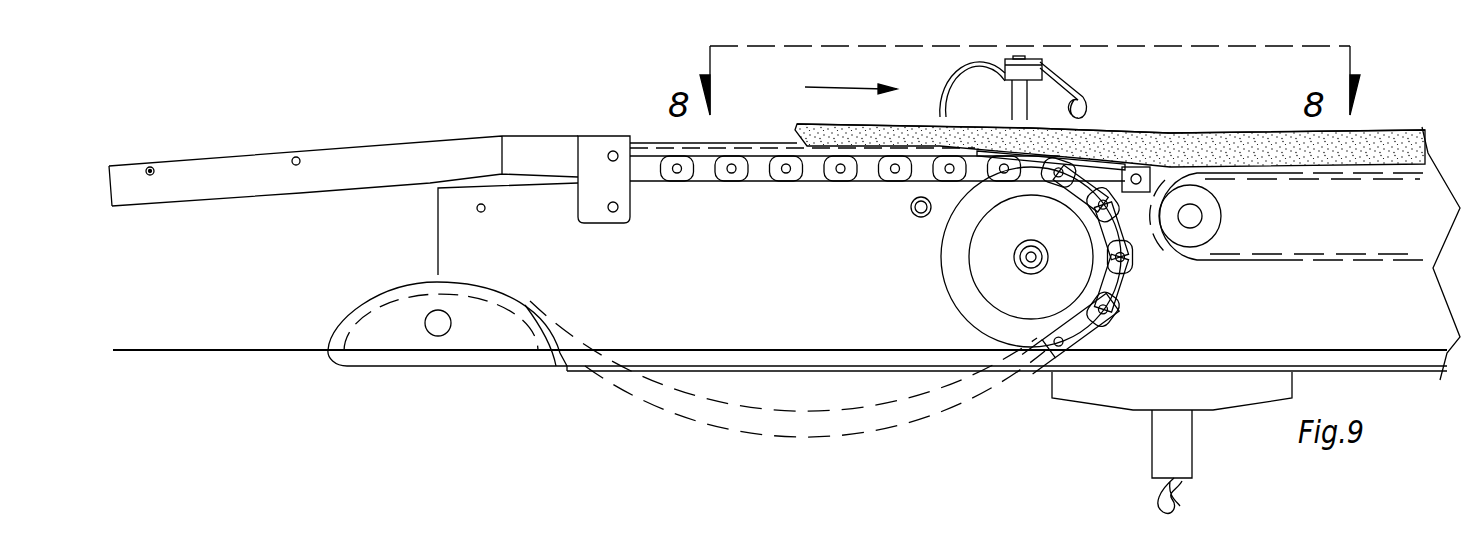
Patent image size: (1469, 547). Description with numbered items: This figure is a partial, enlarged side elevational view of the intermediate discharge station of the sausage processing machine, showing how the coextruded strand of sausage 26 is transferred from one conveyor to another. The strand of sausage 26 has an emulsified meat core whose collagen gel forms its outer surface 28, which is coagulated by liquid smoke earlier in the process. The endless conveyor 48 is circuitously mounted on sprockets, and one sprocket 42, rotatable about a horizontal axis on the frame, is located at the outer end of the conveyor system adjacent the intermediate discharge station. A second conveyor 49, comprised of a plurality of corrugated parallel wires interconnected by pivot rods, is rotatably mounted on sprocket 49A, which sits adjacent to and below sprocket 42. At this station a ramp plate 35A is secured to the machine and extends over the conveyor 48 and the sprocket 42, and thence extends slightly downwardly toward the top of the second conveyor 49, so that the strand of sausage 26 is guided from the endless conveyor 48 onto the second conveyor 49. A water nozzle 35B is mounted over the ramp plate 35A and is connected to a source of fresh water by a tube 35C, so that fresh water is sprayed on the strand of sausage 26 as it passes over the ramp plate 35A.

The strand of sausage 26 is at (1212, 116).
The outer surface 28 is at (1240, 150).
The ramp plate 35A is at (1128, 134).
The water nozzle 35B is at (1047, 40).
The tube 35C is at (970, 84).
The sprocket 42 is at (988, 274).
The endless conveyor 48 is at (764, 183).
The second conveyor 49 is at (1257, 262).
The sprocket 49A is at (1213, 212).